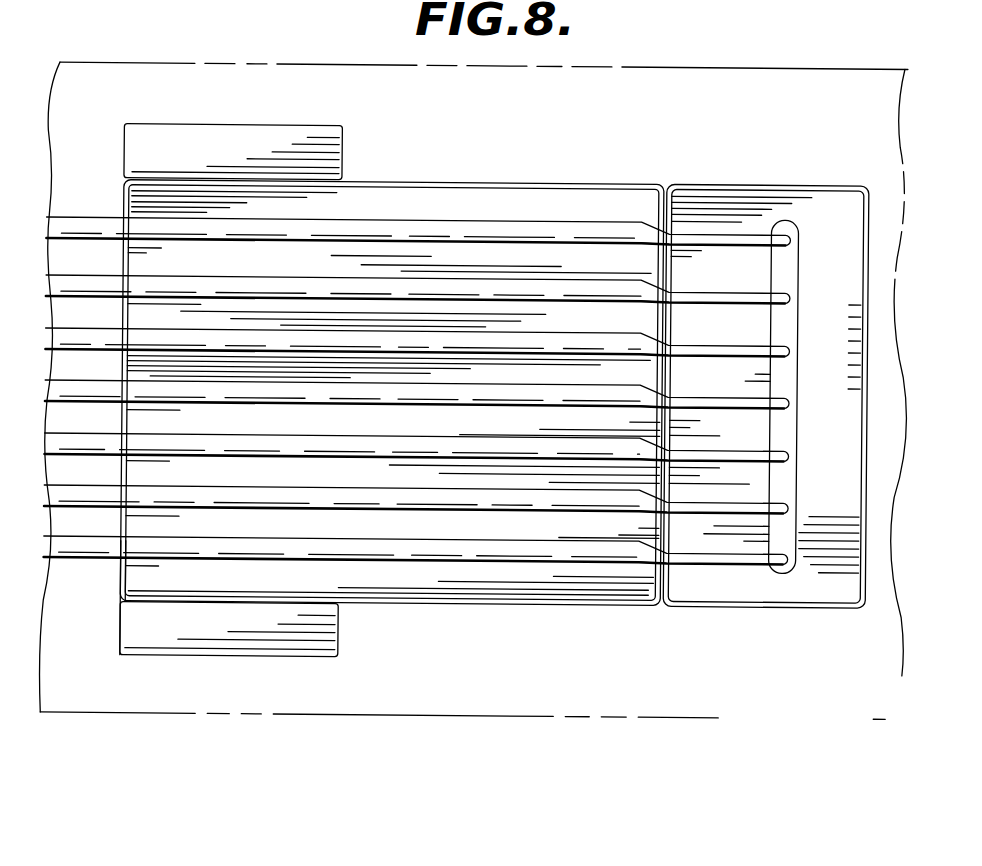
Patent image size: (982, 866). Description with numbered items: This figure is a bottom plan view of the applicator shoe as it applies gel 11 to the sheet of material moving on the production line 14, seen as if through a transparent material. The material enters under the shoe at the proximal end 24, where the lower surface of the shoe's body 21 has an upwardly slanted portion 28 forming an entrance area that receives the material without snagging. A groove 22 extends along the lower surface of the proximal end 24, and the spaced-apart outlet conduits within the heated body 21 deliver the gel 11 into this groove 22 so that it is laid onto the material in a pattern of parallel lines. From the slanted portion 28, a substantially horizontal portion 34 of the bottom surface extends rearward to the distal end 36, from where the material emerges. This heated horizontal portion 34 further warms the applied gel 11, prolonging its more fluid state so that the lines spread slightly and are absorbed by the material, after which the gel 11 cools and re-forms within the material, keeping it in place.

The production line 14 is at (474, 360).
The gel 11 is at (433, 230).
The body 21 is at (495, 176).
The groove 22 is at (797, 245).
The proximal end 24 is at (866, 454).
The slanted portion 28 is at (857, 251).
The horizontal portion 34 is at (270, 487).
The distal end 36 is at (118, 572).